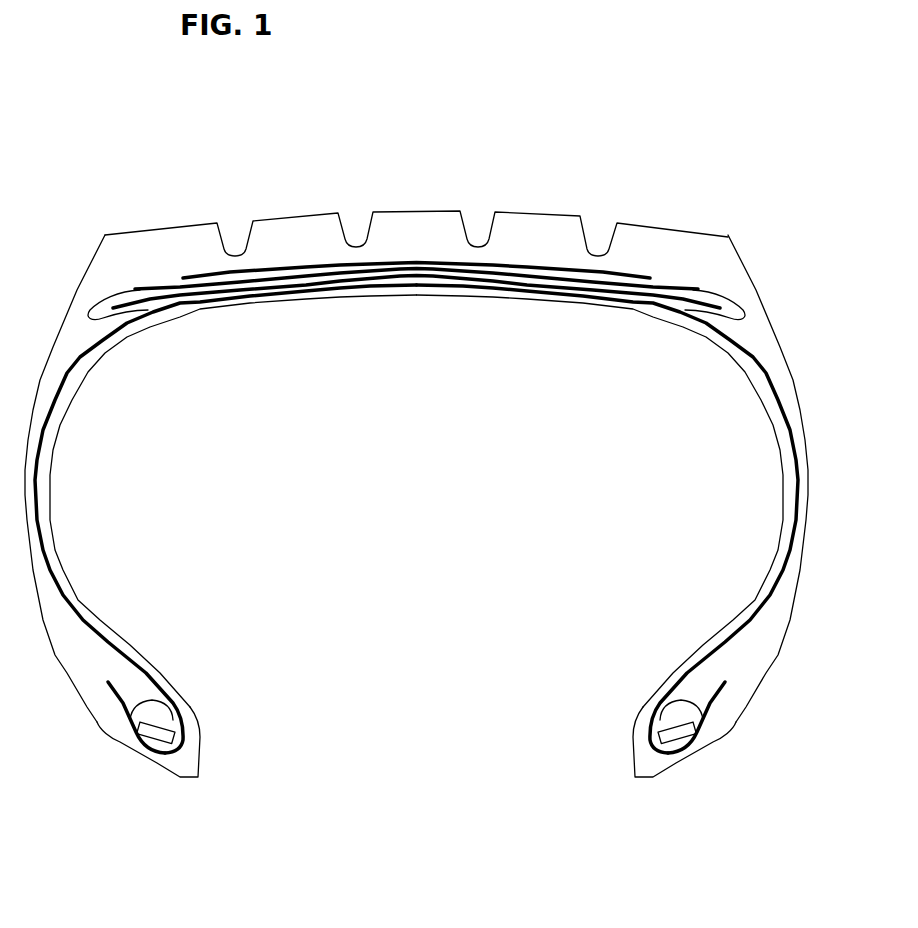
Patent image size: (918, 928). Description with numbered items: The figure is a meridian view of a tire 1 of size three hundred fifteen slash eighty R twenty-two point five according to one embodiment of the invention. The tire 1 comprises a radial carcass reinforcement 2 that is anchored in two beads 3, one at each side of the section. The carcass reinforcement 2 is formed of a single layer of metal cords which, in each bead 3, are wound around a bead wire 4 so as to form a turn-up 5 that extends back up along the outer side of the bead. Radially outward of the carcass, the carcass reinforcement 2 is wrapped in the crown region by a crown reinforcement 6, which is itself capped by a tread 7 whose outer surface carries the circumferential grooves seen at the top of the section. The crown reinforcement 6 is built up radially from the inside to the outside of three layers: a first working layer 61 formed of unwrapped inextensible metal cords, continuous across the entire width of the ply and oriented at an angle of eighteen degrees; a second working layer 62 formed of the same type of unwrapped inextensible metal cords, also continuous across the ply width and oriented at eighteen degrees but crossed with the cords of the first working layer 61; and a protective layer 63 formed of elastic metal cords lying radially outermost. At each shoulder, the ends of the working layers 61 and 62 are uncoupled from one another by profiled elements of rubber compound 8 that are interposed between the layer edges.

The tire 1 is at (480, 165).
The radial carcass reinforcement 2 is at (37, 490).
The bead 3 is at (185, 758).
The bead wire 4 is at (166, 722).
The turn-up 5 is at (117, 697).
The crown reinforcement 6 is at (380, 251).
The first working layer 61 is at (442, 277).
The second working layer 62 is at (668, 290).
The protective layer 63 is at (403, 262).
The tread 7 is at (290, 215).
The profiled elements of rubber compound 8 is at (103, 312).